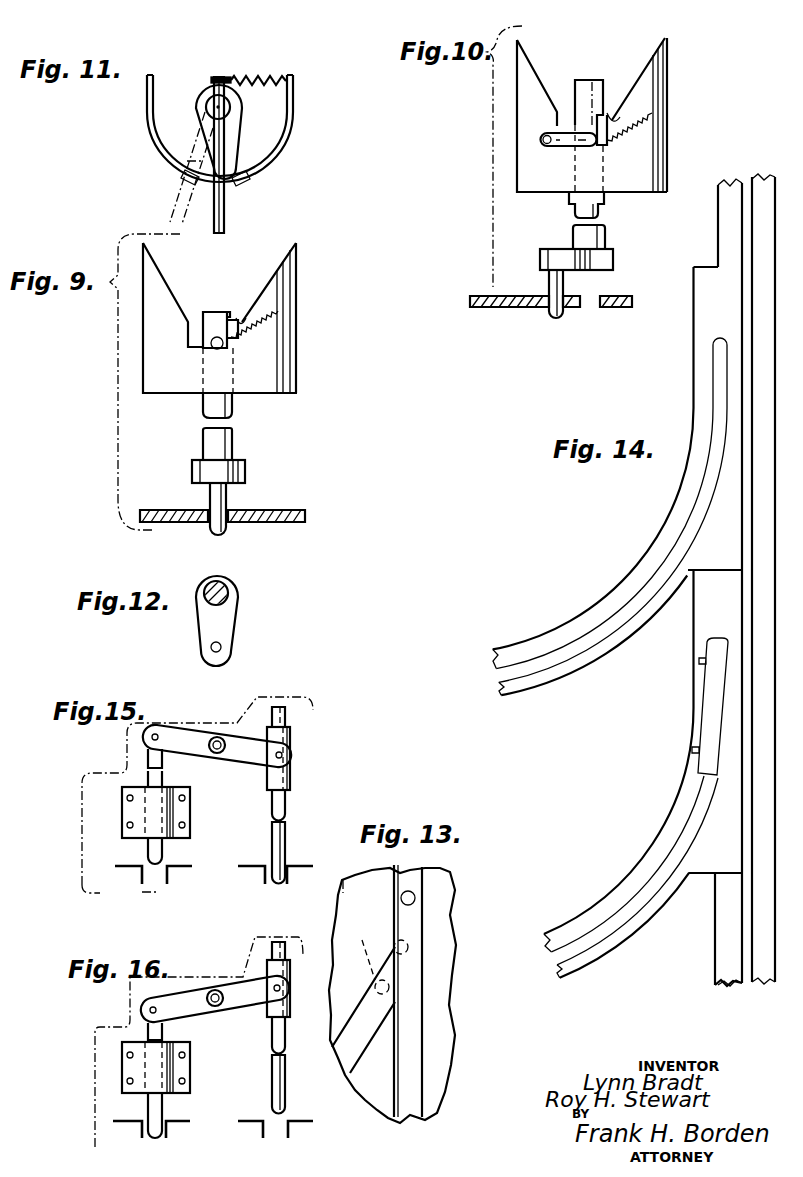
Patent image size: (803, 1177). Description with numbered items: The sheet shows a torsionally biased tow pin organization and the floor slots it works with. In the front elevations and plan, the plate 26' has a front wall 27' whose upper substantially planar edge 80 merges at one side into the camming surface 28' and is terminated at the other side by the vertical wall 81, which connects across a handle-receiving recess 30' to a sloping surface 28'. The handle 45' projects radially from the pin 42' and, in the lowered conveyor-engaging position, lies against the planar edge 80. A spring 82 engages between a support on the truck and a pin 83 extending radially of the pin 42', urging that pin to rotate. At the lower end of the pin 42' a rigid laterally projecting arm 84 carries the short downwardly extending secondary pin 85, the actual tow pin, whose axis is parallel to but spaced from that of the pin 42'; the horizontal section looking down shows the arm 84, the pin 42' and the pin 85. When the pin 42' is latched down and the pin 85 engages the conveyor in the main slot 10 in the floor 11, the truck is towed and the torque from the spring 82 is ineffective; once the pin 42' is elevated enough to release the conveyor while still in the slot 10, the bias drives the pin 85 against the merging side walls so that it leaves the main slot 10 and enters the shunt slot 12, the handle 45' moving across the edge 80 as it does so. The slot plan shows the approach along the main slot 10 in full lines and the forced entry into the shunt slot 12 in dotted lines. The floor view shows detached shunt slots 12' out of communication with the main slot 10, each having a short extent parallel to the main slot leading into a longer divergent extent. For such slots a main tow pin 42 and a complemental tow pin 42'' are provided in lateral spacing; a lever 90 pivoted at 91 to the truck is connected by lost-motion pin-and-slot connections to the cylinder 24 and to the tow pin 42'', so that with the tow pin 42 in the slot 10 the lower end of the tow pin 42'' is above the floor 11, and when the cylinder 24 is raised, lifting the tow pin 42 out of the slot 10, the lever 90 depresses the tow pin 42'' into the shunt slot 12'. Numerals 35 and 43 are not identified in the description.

In FIG. 9, the main slot 10 is at (212, 527).
In FIG. 10, the main slot 10 is at (595, 306).
In FIG. 14, the main slot 10 is at (745, 527).
In FIG. 15, the main slot 10 is at (270, 884).
In FIG. 16, the main slot 10 is at (276, 1142).
In FIG. 13, the main slot 10 is at (412, 868).
In FIG. 9, the floor 11 is at (284, 510).
In FIG. 10, the floor 11 is at (612, 297).
In FIG. 15, the floor 11 is at (185, 866).
In FIG. 16, the floor 11 is at (118, 1120).
In FIG. 13, the floor 11 is at (437, 912).
In FIG. 10, the shunt slot 12 is at (531, 322).
In FIG. 13, the shunt slot 12 is at (351, 1010).
In FIG. 14, the shunt slot 12' is at (610, 658).
In FIG. 15, the shunt slot 12' is at (122, 894).
In FIG. 16, the shunt slot 12' is at (131, 1151).
In FIG. 9, the smaller cylinder 24 is at (200, 398).
In FIG. 10, the smaller cylinder 24 is at (569, 199).
In FIG. 15, the smaller cylinder 24 is at (290, 772).
In FIG. 16, the smaller cylinder 24 is at (267, 1015).
In FIG. 9, the plate 26' is at (273, 332).
In FIG. 10, the plate 26' is at (560, 126).
In FIG. 9, the front wall 27' is at (217, 332).
In FIG. 10, the front wall 27' is at (560, 116).
In FIG. 11, the camming surface 28' is at (216, 128).
In FIG. 9, the camming surface 28' is at (235, 295).
In FIG. 10, the camming surface 28' is at (578, 82).
In FIG. 11, the handle-receiving recess 30' is at (234, 132).
In FIG. 9, the handle-receiving recess 30' is at (253, 310).
In FIG. 10, the handle-receiving recess 30' is at (629, 102).
In FIG. 13, the holes 35 is at (401, 898).
In FIG. 15, the main tow pin 42 is at (299, 724).
In FIG. 16, the main tow pin 42 is at (294, 955).
In FIG. 11, the pin 42' is at (165, 108).
In FIG. 9, the pin 42' is at (238, 363).
In FIG. 10, the pin 42' is at (618, 148).
In FIG. 12, the pin 42' is at (241, 595).
In FIG. 15, the complemental tow pin 42'' is at (140, 807).
In FIG. 16, the complemental tow pin 42'' is at (165, 1080).
In FIG. 15, the rod end 43 is at (286, 862).
In FIG. 16, the rod end 43 is at (284, 1112).
In FIG. 11, the handle 45' is at (221, 155).
In FIG. 9, the handle 45' is at (234, 369).
In FIG. 10, the handle 45' is at (528, 158).
In FIG. 11, the planar edge 80 is at (184, 178).
In FIG. 9, the planar edge 80 is at (193, 350).
In FIG. 10, the planar edge 80 is at (592, 148).
In FIG. 11, the vertical wall 81 is at (240, 184).
In FIG. 9, the vertical wall 81 is at (203, 322).
In FIG. 10, the vertical wall 81 is at (575, 122).
In FIG. 11, the spring 82 is at (268, 88).
In FIG. 10, the spring 82 is at (668, 133).
In FIG. 11, the pin 83 is at (211, 80).
In FIG. 9, the arm 84 is at (245, 470).
In FIG. 10, the arm 84 is at (613, 260).
In FIG. 12, the arm 84 is at (238, 612).
In FIG. 9, the secondary pin 85 is at (227, 493).
In FIG. 10, the secondary pin 85 is at (549, 285).
In FIG. 12, the secondary pin 85 is at (210, 648).
In FIG. 15, the lever 90 is at (195, 733).
In FIG. 16, the lever 90 is at (226, 986).
In FIG. 15, the pivot 91 is at (223, 752).
In FIG. 16, the pivot 91 is at (218, 1008).